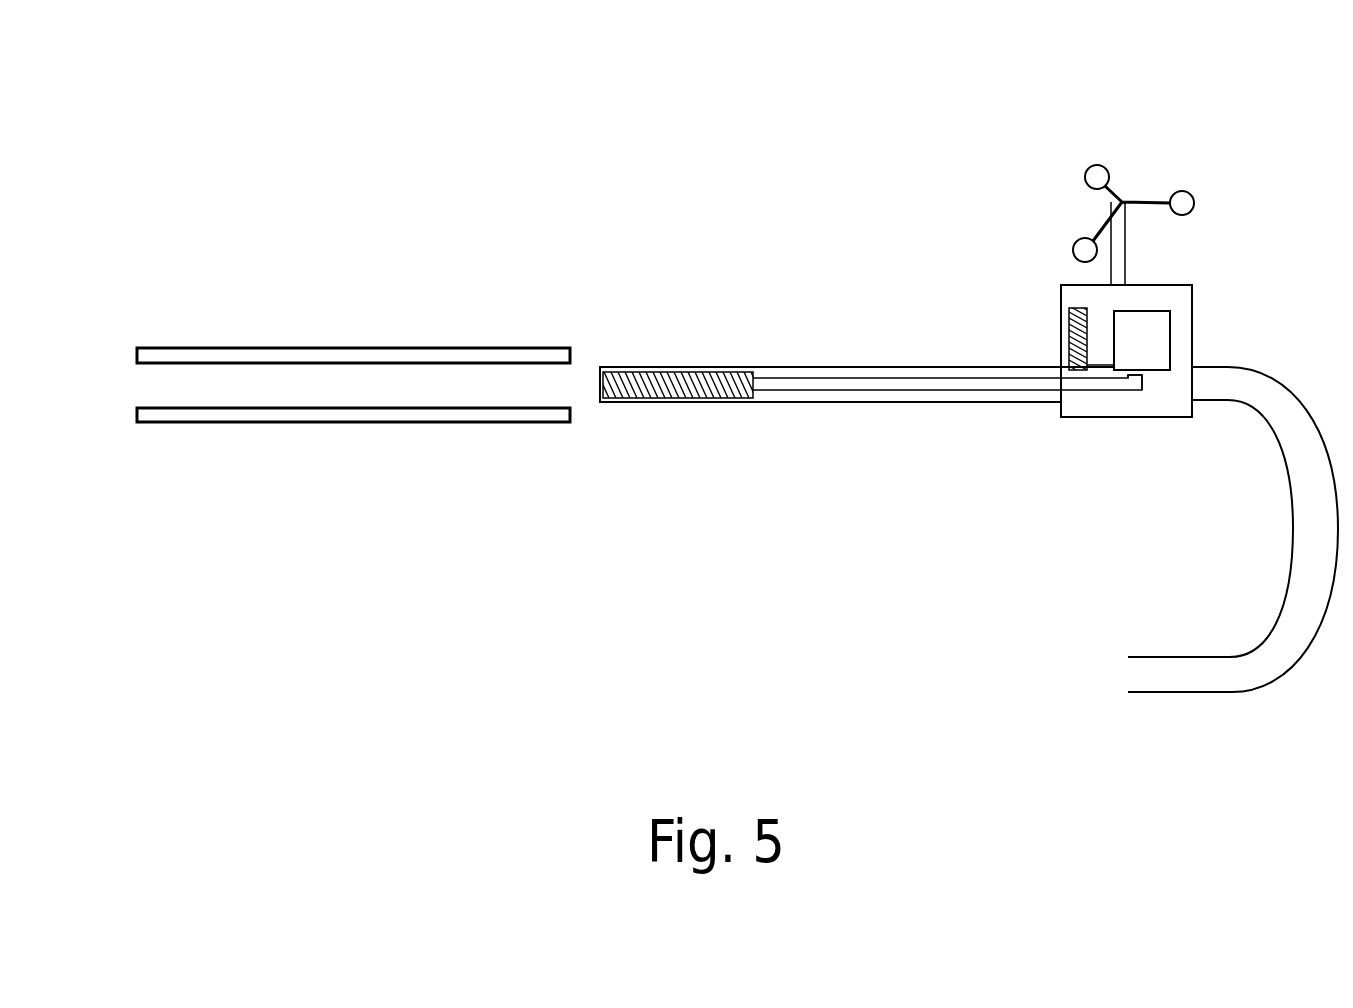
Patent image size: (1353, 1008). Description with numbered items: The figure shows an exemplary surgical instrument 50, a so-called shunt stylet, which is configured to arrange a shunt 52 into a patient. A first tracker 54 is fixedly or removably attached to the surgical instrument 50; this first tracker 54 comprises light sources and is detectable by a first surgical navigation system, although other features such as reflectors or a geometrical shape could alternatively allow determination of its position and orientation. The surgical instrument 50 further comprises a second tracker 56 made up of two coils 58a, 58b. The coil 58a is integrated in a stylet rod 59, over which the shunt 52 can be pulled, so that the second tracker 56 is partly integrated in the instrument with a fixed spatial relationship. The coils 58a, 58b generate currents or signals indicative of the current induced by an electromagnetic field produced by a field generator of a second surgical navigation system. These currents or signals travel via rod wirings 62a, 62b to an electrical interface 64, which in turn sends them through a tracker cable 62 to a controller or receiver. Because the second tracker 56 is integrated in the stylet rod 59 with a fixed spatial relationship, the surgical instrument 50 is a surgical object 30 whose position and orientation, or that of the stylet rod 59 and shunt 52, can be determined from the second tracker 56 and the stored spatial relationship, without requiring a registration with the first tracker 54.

The surgical object 30 is at (861, 369).
The surgical instrument 50 is at (533, 188).
The shunt 52 is at (302, 355).
The first tracker 54 is at (1127, 195).
The second tracker 56 is at (955, 416).
The coil 58a is at (723, 368).
The coil 58b is at (1067, 310).
The stylet rod 59 is at (798, 365).
The tracker cable 62 is at (1173, 657).
The rod wiring 62a is at (912, 380).
The rod wiring 62b is at (1097, 380).
The electrical interface 64 is at (1158, 330).